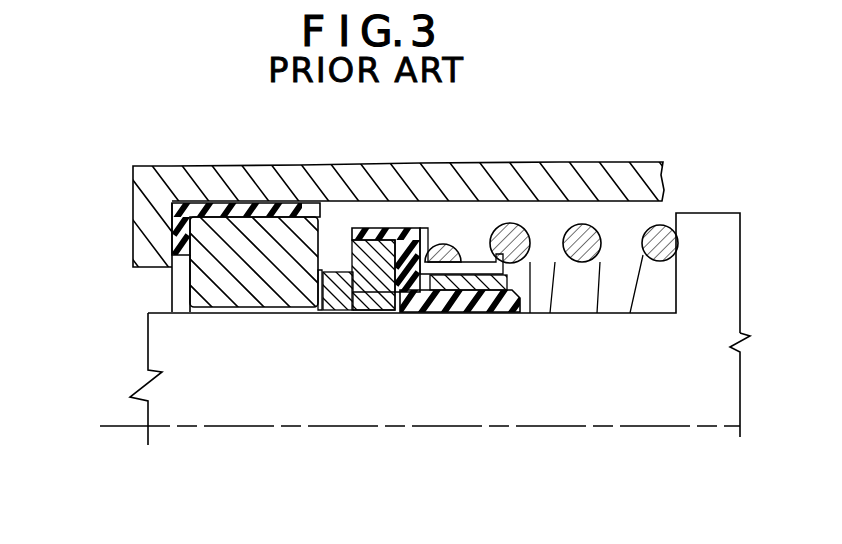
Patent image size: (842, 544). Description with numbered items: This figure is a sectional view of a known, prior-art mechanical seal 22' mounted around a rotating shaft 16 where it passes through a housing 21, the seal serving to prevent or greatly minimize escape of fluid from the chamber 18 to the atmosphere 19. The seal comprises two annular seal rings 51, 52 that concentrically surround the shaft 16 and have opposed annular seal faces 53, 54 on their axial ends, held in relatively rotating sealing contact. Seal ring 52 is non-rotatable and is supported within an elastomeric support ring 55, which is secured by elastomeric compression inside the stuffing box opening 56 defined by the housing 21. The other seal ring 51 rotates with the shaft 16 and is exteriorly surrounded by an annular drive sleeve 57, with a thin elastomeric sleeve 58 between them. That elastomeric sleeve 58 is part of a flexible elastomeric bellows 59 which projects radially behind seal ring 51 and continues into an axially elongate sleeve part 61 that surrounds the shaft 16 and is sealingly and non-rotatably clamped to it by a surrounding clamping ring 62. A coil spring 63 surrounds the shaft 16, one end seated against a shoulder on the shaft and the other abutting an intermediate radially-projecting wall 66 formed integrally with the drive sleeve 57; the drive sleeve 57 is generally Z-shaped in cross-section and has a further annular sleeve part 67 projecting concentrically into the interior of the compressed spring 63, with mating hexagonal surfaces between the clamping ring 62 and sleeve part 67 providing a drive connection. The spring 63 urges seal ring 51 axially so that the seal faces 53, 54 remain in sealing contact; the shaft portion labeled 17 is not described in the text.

The shaft 16 is at (135, 378).
The shaft 17 is at (570, 425).
The chamber 18 is at (622, 218).
The atmosphere 19 is at (85, 220).
The housing 21 is at (624, 163).
The mechanical seal 22' is at (420, 473).
The seal ring 51 is at (363, 313).
The seal ring 52 is at (243, 313).
The seal face 53 is at (300, 313).
The seal face 54 is at (330, 313).
The elastomeric support ring 55 is at (172, 234).
The stuffing box opening 56 is at (478, 262).
The drive sleeve 57 is at (373, 230).
The elastomeric sleeve 58 is at (357, 228).
The bellows 59 is at (410, 313).
The sleeve part 61 is at (477, 313).
The clamping ring 62 is at (505, 313).
The coil spring 63 is at (567, 225).
The radially-projecting wall 66 is at (439, 225).
The sleeve part 67 is at (470, 205).